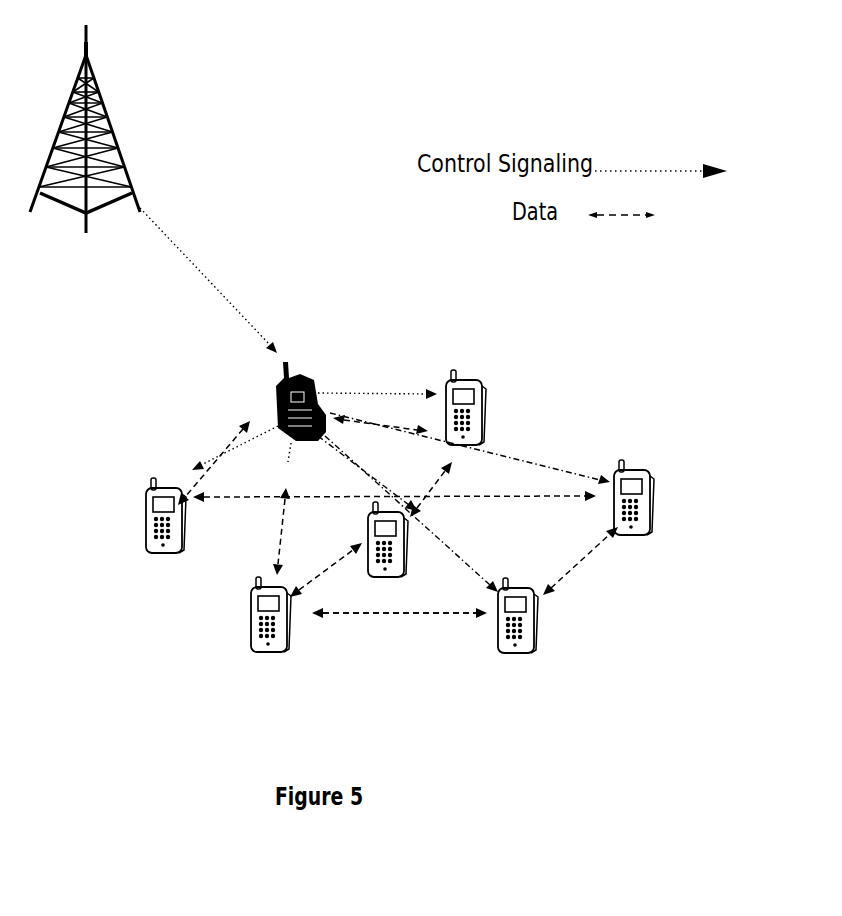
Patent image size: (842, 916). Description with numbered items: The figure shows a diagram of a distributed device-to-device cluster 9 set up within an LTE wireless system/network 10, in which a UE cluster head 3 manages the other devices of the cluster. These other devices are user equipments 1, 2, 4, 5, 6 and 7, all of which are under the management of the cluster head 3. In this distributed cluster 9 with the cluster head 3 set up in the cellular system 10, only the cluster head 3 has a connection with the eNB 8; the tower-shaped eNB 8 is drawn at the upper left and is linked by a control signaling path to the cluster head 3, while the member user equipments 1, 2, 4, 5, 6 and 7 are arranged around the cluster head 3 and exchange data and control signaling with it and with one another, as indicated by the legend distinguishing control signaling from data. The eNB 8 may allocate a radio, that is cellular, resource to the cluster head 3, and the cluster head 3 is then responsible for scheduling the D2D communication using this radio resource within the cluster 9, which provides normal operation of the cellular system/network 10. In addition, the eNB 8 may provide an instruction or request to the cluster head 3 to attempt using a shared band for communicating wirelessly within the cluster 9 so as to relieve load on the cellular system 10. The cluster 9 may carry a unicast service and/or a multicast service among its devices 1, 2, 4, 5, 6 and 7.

The user equipment 1 is at (166, 539).
The user equipment 2 is at (271, 639).
The UE cluster head 3 is at (346, 515).
The user equipment 4 is at (466, 431).
The user equipment 5 is at (518, 639).
The user equipment 6 is at (634, 520).
The user equipment 7 is at (399, 602).
The eNB 8 is at (149, 148).
The distributed D2D cluster 9 is at (396, 299).
The LTE wireless system/network 10 is at (352, 118).